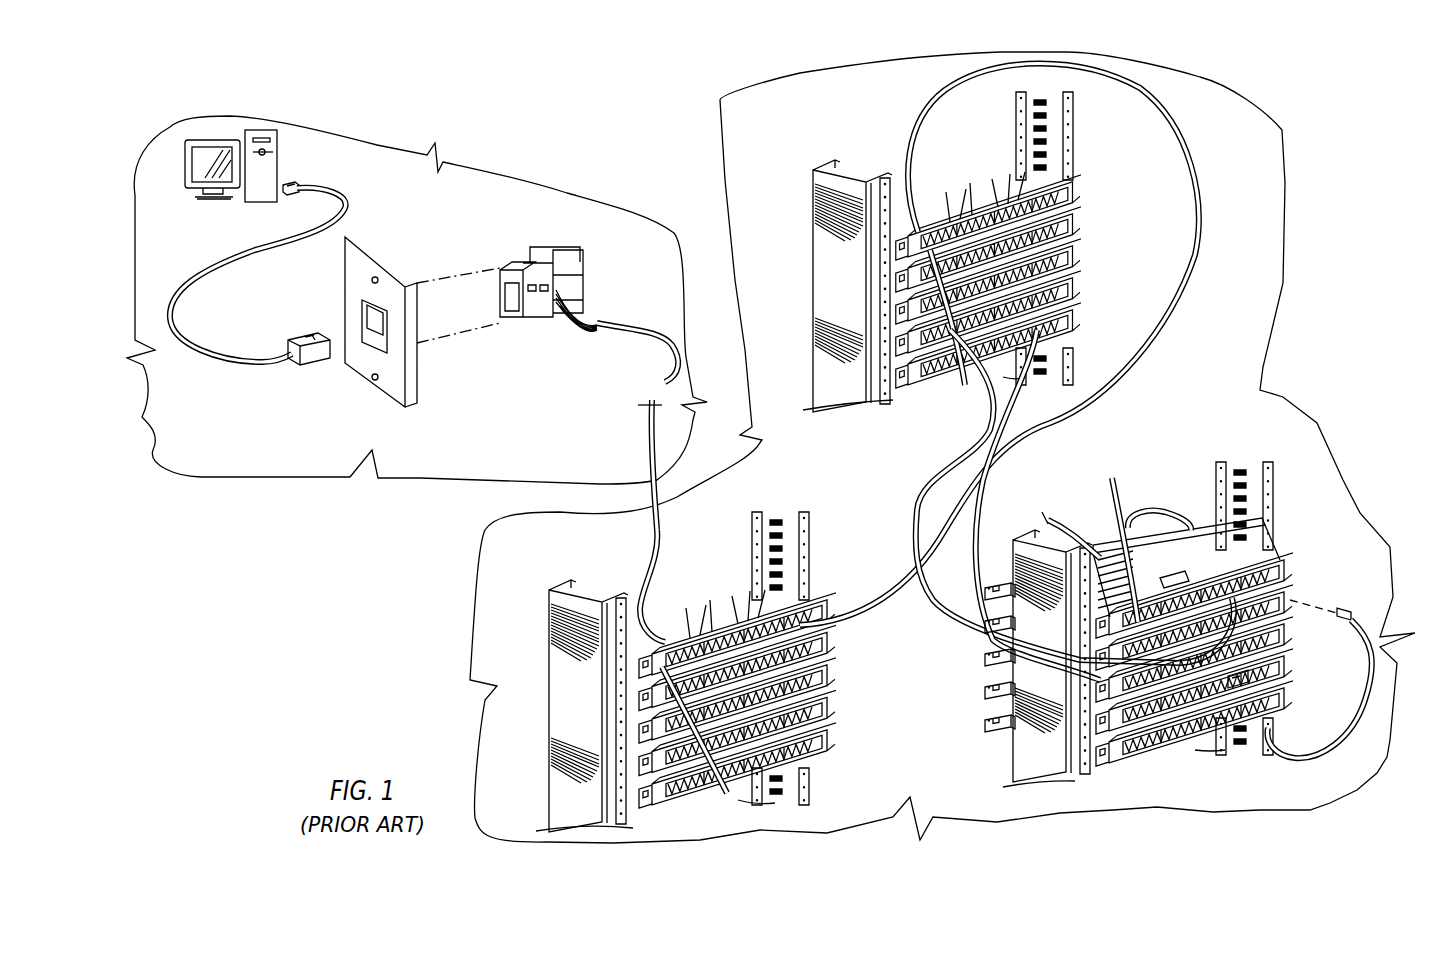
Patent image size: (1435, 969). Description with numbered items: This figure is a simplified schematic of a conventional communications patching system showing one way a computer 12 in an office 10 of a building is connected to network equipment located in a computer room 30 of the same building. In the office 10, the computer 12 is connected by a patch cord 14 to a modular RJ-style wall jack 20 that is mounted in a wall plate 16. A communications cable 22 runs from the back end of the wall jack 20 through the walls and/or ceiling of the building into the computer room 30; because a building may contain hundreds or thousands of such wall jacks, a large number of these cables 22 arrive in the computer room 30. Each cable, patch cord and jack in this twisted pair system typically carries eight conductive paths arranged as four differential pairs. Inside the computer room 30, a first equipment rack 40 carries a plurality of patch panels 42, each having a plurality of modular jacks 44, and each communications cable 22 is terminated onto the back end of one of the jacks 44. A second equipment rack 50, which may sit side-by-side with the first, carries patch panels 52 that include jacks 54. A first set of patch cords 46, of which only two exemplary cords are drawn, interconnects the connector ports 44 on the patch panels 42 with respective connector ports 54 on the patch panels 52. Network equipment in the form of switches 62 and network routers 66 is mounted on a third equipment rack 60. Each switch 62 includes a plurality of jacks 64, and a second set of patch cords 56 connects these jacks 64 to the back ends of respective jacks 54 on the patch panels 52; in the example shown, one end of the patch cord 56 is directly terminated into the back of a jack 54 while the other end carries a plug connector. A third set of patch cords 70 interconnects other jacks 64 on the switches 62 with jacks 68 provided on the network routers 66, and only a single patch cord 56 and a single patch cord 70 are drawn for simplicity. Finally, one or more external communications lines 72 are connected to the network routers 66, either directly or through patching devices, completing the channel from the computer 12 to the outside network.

The office 10 is at (640, 137).
The computer 12 is at (278, 150).
The patch cord 14 is at (181, 297).
The wall plate 16 is at (418, 394).
The modular wall jack 20 is at (527, 263).
The communications cable 22 is at (629, 325).
The computer room 30 is at (470, 818).
The first equipment rack 40 is at (560, 613).
The patch panels 42 is at (820, 640).
The jacks 44 is at (702, 746).
The first set of patch cords 46 is at (937, 470).
The second equipment rack 50 is at (837, 207).
The patch panels 52 is at (1073, 223).
The jacks 54 is at (953, 333).
The second set of patch cords 56 is at (1197, 255).
The third equipment rack 60 is at (1300, 450).
The switches 62 is at (1280, 600).
The jacks 64 is at (1117, 535).
The network routers 66 is at (1017, 758).
The jacks 68 is at (1250, 672).
The third set of patch cords 70 is at (1353, 705).
The external communications lines 72 is at (1053, 517).